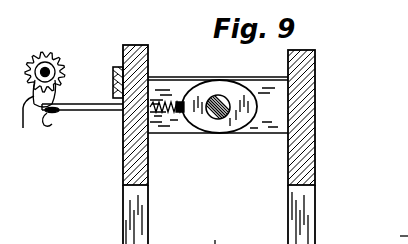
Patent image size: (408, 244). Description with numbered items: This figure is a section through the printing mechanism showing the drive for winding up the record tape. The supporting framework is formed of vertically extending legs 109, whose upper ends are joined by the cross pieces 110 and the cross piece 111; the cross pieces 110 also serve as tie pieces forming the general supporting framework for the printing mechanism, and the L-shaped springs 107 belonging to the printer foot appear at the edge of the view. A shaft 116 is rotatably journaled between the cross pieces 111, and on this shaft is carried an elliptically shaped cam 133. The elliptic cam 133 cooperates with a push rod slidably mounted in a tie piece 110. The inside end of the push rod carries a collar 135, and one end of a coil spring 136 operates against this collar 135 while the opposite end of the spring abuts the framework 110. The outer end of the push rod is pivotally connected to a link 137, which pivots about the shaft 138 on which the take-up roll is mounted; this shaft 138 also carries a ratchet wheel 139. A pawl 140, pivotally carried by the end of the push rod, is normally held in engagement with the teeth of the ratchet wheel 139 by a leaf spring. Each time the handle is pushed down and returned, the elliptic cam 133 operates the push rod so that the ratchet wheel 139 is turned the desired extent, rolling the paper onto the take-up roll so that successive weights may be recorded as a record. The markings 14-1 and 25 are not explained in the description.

The cross piece 111 is at (274, 124).
The elliptically shaped cam 133 is at (240, 90).
The shaft 116 is at (210, 118).
The collar 135 is at (182, 100).
The coil spring 136 is at (158, 98).
The cross piece 110 is at (123, 162).
The legs 109 is at (123, 216).
The shaft 138 is at (58, 63).
The ratchet wheel 139 is at (47, 58).
The link 137 is at (50, 95).
The hook 14-1 is at (62, 124).
The pawl 140 is at (29, 125).
The base 25 is at (217, 233).
The L-shaped springs 107 is at (391, 235).